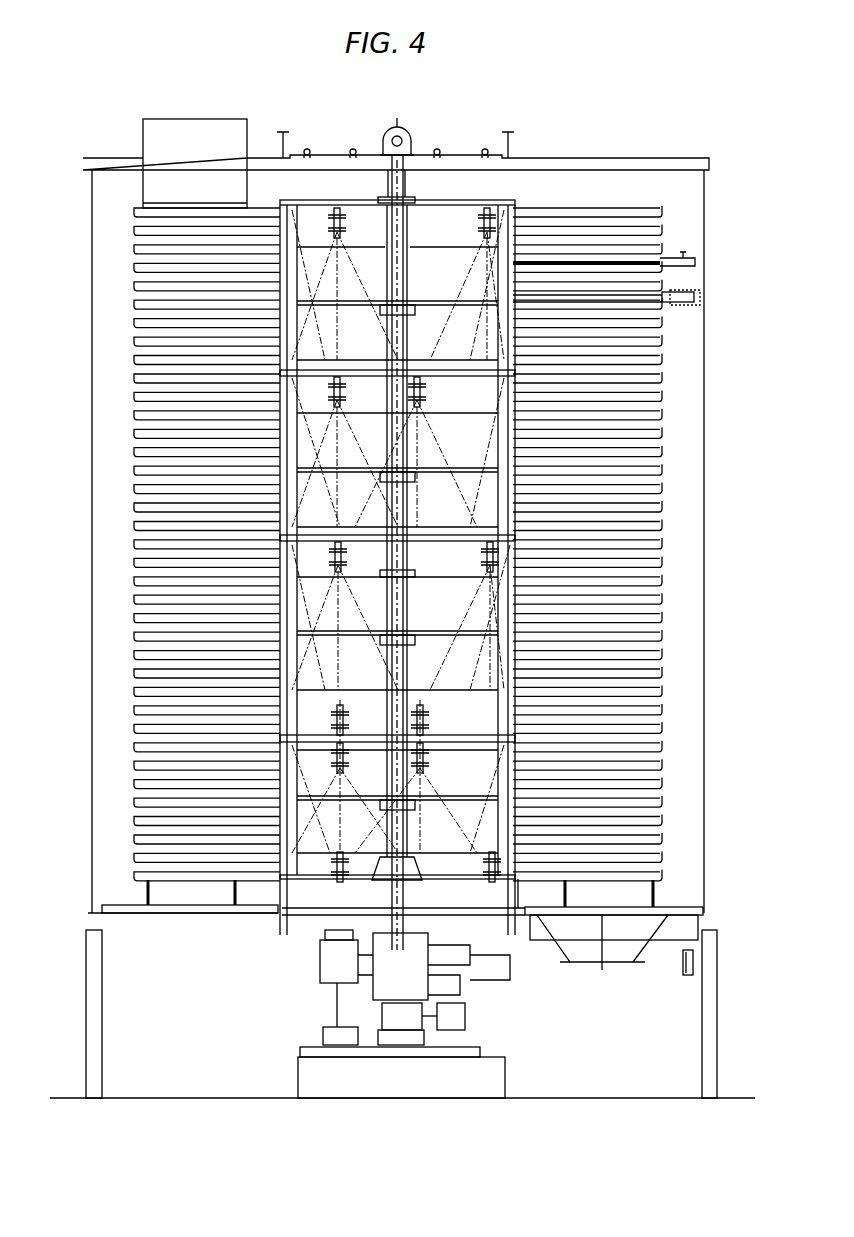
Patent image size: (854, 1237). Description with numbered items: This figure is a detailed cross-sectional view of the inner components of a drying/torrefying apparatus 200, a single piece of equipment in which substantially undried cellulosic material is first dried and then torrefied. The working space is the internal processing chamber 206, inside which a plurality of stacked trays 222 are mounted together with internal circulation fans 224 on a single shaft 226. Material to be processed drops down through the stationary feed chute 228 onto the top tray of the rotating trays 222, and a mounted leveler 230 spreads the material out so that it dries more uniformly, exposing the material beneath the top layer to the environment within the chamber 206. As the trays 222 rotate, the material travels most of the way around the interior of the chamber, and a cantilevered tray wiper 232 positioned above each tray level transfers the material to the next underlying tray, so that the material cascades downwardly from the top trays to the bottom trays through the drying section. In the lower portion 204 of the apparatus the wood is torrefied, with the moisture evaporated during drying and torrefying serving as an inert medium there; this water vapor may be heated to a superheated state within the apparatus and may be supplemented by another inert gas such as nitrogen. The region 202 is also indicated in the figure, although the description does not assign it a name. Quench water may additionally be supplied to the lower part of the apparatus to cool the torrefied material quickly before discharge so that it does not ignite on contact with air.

The apparatus 200 is at (634, 130).
The upper drying section 202 is at (698, 340).
The lower portion 204 is at (698, 760).
The internal processing chamber 206 is at (103, 597).
The stacked trays 222 is at (133, 510).
The internal circulation fans 224 is at (377, 733).
The shaft 226 is at (400, 233).
The stationary feed chute 228 is at (143, 135).
The mounted leveler 230 is at (662, 288).
The tray wiper 232 is at (648, 260).